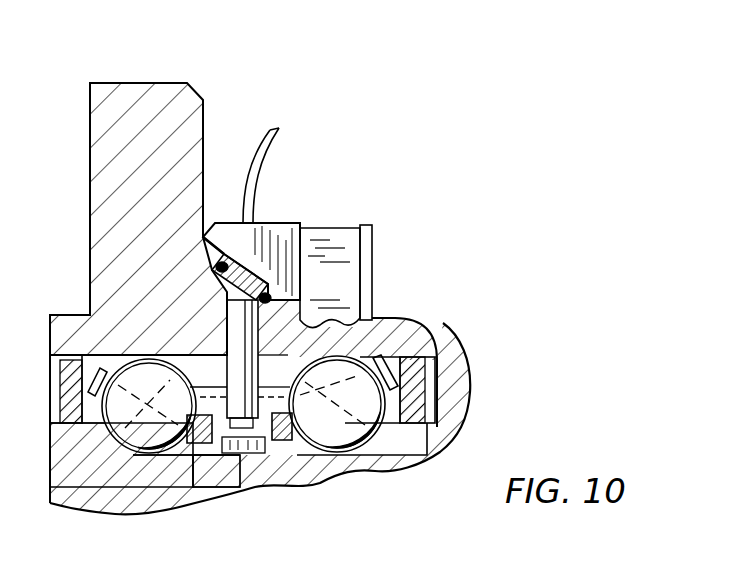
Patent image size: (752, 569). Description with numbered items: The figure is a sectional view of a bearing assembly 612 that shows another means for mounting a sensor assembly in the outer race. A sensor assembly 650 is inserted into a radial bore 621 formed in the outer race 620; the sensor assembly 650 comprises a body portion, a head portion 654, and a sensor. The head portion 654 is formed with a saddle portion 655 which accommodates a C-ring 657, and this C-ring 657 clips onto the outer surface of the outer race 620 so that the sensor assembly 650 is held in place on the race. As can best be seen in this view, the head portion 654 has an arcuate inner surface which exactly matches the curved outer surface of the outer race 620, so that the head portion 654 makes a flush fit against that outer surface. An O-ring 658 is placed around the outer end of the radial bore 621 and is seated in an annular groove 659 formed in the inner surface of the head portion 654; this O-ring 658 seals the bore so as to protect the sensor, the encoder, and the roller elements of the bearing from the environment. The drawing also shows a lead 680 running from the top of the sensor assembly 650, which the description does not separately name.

The bearing assembly 612 is at (430, 33).
The outer race 620 is at (122, 92).
The radial bore 621 is at (228, 347).
The sensor assembly 650 is at (291, 193).
The head portion 654 is at (297, 223).
The saddle portion 655 is at (367, 284).
The C-ring 657 is at (333, 480).
The O-ring 658 is at (218, 268).
The annular groove 659 is at (216, 260).
The tube 680 is at (268, 148).